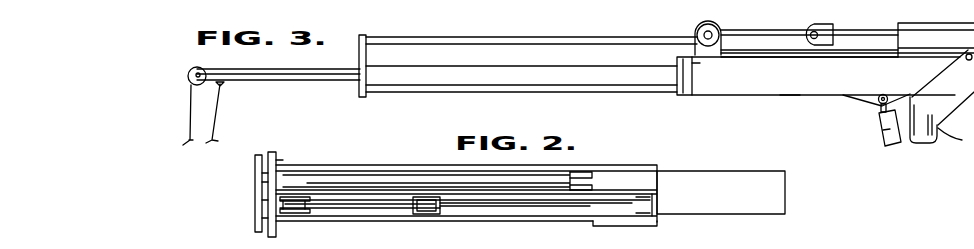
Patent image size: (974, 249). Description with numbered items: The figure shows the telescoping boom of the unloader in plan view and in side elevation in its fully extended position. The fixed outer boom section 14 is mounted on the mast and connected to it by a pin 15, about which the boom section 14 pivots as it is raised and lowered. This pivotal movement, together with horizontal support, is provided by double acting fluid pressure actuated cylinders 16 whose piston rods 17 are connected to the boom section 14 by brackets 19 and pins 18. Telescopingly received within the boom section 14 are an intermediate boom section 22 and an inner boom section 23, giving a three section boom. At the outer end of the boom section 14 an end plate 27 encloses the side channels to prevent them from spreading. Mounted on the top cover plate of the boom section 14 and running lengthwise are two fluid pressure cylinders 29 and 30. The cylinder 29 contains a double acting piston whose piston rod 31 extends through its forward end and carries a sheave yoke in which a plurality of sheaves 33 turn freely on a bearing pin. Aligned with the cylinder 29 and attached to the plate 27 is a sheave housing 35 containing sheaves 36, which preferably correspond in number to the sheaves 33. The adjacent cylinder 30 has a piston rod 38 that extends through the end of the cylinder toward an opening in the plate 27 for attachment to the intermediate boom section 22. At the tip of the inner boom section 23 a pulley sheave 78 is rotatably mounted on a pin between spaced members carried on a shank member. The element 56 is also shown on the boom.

In FIG. 3, the boom section 14 is at (794, 100).
In FIG. 2, the boom section 14 is at (323, 160).
In FIG. 3, the pin 15 is at (966, 60).
In FIG. 3, the fluid pressure actuated cylinders 16 is at (882, 131).
In FIG. 3, the piston rods 17 is at (880, 108).
In FIG. 3, the pins 18 is at (893, 89).
In FIG. 3, the brackets 19 is at (858, 104).
In FIG. 2, the intermediate boom section 22 is at (731, 215).
In FIG. 3, the inner boom section 23 is at (327, 84).
In FIG. 3, the end plate 27 is at (695, 77).
In FIG. 2, the end plate 27 is at (278, 158).
In FIG. 2, the fluid pressure cylinder 29 is at (638, 205).
In FIG. 2, the fluid pressure cylinder 30 is at (390, 176).
In FIG. 3, the piston rod 31 is at (866, 20).
In FIG. 3, the sheaves 33 is at (808, 47).
In FIG. 2, the sheaves 33 is at (413, 210).
In FIG. 3, the sheave housing 35 is at (693, 28).
In FIG. 2, the sheaves 36 is at (295, 213).
In FIG. 3, the piston rod 38 is at (490, 37).
In FIG. 3, the flange 56 is at (357, 48).
In FIG. 2, the flange 56 is at (255, 201).
In FIG. 3, the pulley sheave 78 is at (188, 75).